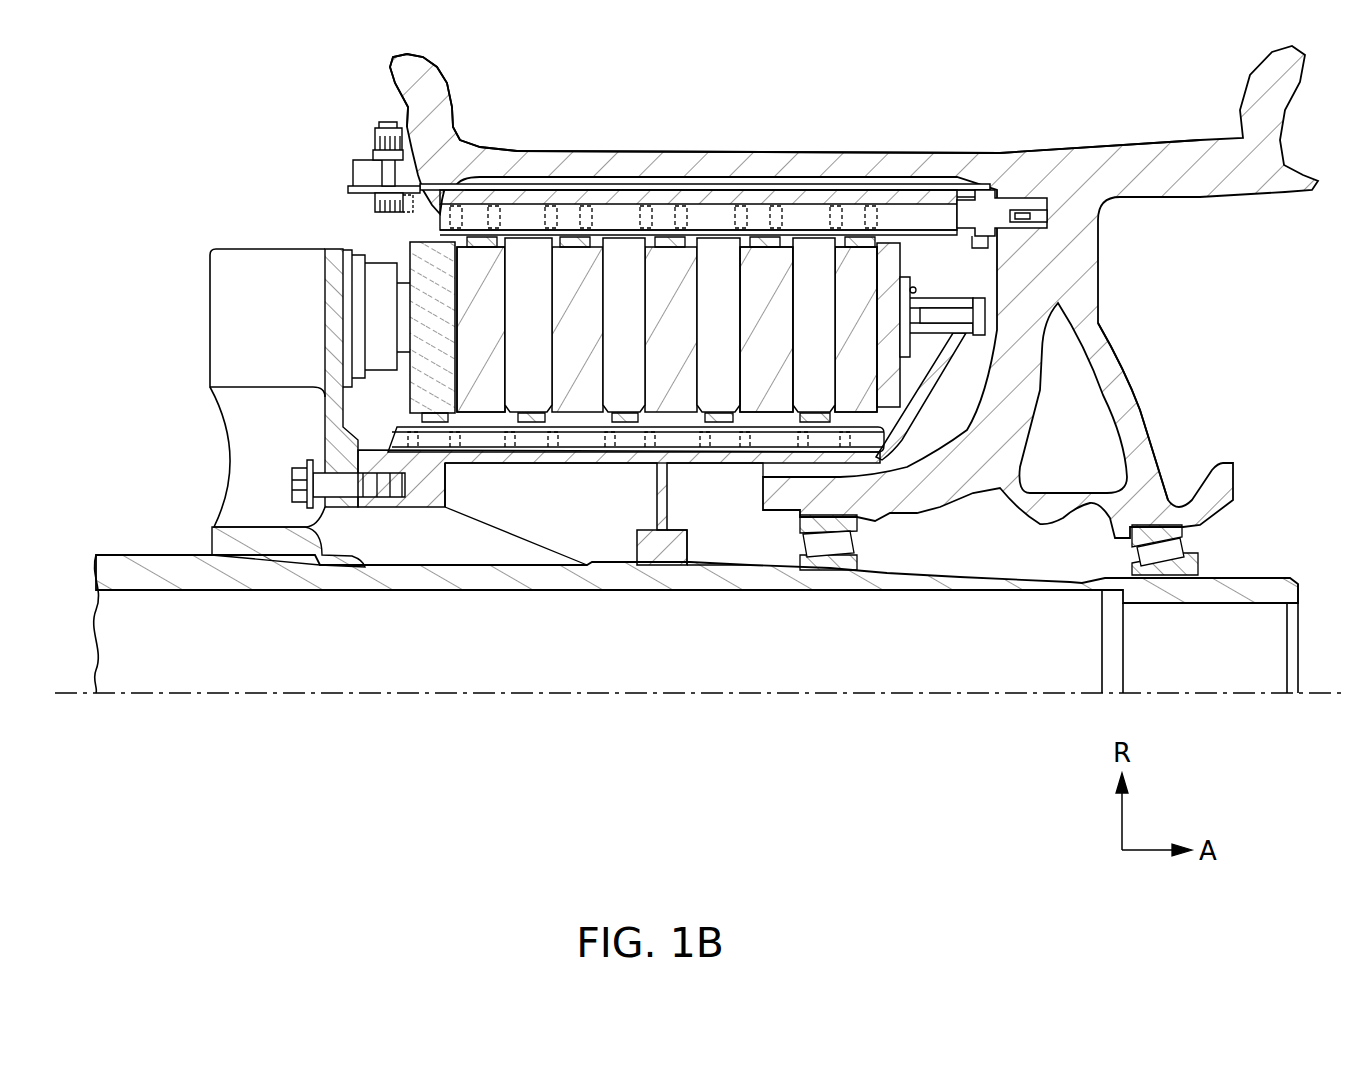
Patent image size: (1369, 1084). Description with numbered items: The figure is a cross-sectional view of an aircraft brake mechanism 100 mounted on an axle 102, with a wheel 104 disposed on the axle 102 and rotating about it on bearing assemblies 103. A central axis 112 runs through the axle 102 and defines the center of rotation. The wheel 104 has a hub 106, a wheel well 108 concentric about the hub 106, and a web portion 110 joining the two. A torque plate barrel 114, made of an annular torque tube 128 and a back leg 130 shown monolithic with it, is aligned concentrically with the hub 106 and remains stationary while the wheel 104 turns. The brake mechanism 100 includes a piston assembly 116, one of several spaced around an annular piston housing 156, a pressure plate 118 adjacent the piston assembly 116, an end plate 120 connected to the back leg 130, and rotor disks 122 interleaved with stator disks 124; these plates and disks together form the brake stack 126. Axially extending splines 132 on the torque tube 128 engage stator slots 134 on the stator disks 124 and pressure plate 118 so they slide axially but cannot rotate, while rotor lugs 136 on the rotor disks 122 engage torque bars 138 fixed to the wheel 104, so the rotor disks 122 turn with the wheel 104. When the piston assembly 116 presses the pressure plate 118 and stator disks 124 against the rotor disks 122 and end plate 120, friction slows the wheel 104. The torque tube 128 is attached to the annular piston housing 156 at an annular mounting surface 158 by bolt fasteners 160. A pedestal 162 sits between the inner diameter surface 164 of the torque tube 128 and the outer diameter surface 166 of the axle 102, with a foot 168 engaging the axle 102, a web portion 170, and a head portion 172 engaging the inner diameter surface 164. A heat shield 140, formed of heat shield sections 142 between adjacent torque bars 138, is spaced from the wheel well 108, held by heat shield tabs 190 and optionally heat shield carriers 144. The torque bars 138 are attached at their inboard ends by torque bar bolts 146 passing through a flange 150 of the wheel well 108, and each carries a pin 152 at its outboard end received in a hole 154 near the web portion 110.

The brake mechanism 100 is at (217, 122).
The axle 102 is at (975, 588).
The bearing assemblies 103 is at (1173, 548).
The wheel 104 is at (1118, 301).
The hub 106 is at (838, 497).
The wheel well 108 is at (997, 153).
The web portion 110 is at (1124, 376).
The central axis 112 is at (935, 696).
The torque plate barrel 114 is at (508, 456).
The piston assembly 116 is at (302, 229).
The pressure plate 118 is at (410, 258).
The end plate 120 is at (903, 258).
The rotor disks 122 is at (485, 255).
The stator disks 124 is at (623, 248).
The brake stack 126 is at (773, 252).
The torque tube 128 is at (463, 466).
The back leg 130 is at (921, 396).
The splines 132 is at (388, 443).
The stator slots 134 is at (787, 442).
The rotor lugs 136 is at (553, 215).
The torque bars 138 is at (913, 213).
The heat shield 140 is at (668, 184).
The heat shield sections 142 is at (766, 189).
The heat shield carriers 144 is at (440, 210).
The torque bar bolts 146 is at (383, 121).
The flange 150 is at (360, 166).
The pin 152 is at (1000, 205).
The hole 154 is at (1032, 210).
The annular piston housing 156 is at (210, 252).
The annular mounting surface 158 is at (400, 510).
The bolt fasteners 160 is at (292, 485).
The pedestal 162 is at (653, 487).
The inner diameter surface 164 is at (548, 464).
The outer diameter surface 166 is at (695, 565).
The foot 168 is at (688, 530).
The web portion 170 is at (650, 518).
The head portion 172 is at (657, 466).
The heat shield tabs 190 is at (983, 248).